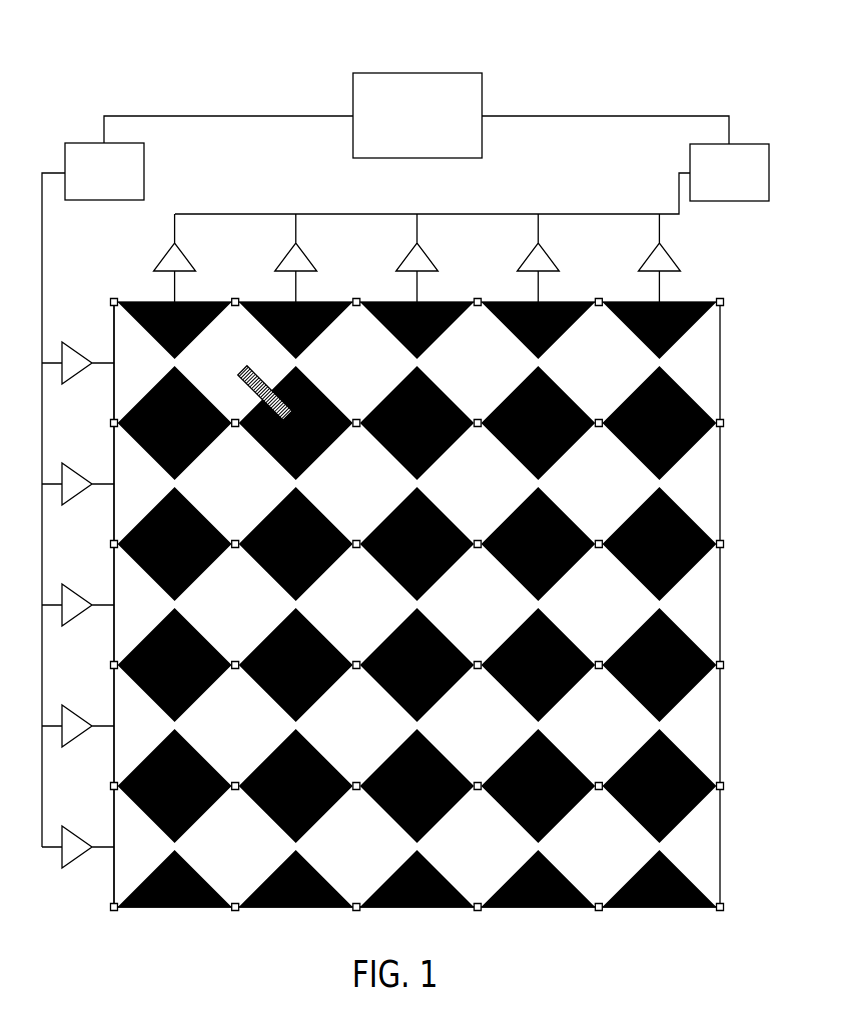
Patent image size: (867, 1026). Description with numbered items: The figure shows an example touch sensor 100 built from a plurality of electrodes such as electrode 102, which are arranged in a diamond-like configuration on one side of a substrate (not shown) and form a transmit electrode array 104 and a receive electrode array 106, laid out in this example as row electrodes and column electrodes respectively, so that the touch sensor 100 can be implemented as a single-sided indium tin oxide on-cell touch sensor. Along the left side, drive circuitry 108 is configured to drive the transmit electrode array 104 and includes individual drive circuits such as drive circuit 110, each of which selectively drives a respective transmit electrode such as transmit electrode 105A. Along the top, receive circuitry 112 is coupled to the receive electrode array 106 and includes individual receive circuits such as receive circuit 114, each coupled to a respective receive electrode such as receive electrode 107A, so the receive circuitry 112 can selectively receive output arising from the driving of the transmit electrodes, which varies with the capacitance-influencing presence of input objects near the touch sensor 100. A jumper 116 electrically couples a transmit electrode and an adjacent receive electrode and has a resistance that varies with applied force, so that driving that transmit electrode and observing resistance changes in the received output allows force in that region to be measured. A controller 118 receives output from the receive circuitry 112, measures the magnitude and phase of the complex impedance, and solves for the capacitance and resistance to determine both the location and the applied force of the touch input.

The touch sensor 100 is at (402, 40).
The electrode 102 is at (452, 300).
The transmit electrode array 104 is at (98, 333).
The transmit electrode 105A is at (122, 385).
The receive electrode array 106 is at (658, 921).
The receive electrode 107A is at (710, 845).
The drive circuitry 108 is at (89, 182).
The drive circuit 110 is at (68, 863).
The receive circuitry 112 is at (714, 183).
The receive circuit 114 is at (676, 266).
The jumper 116 is at (243, 378).
The controller 118 is at (402, 126).